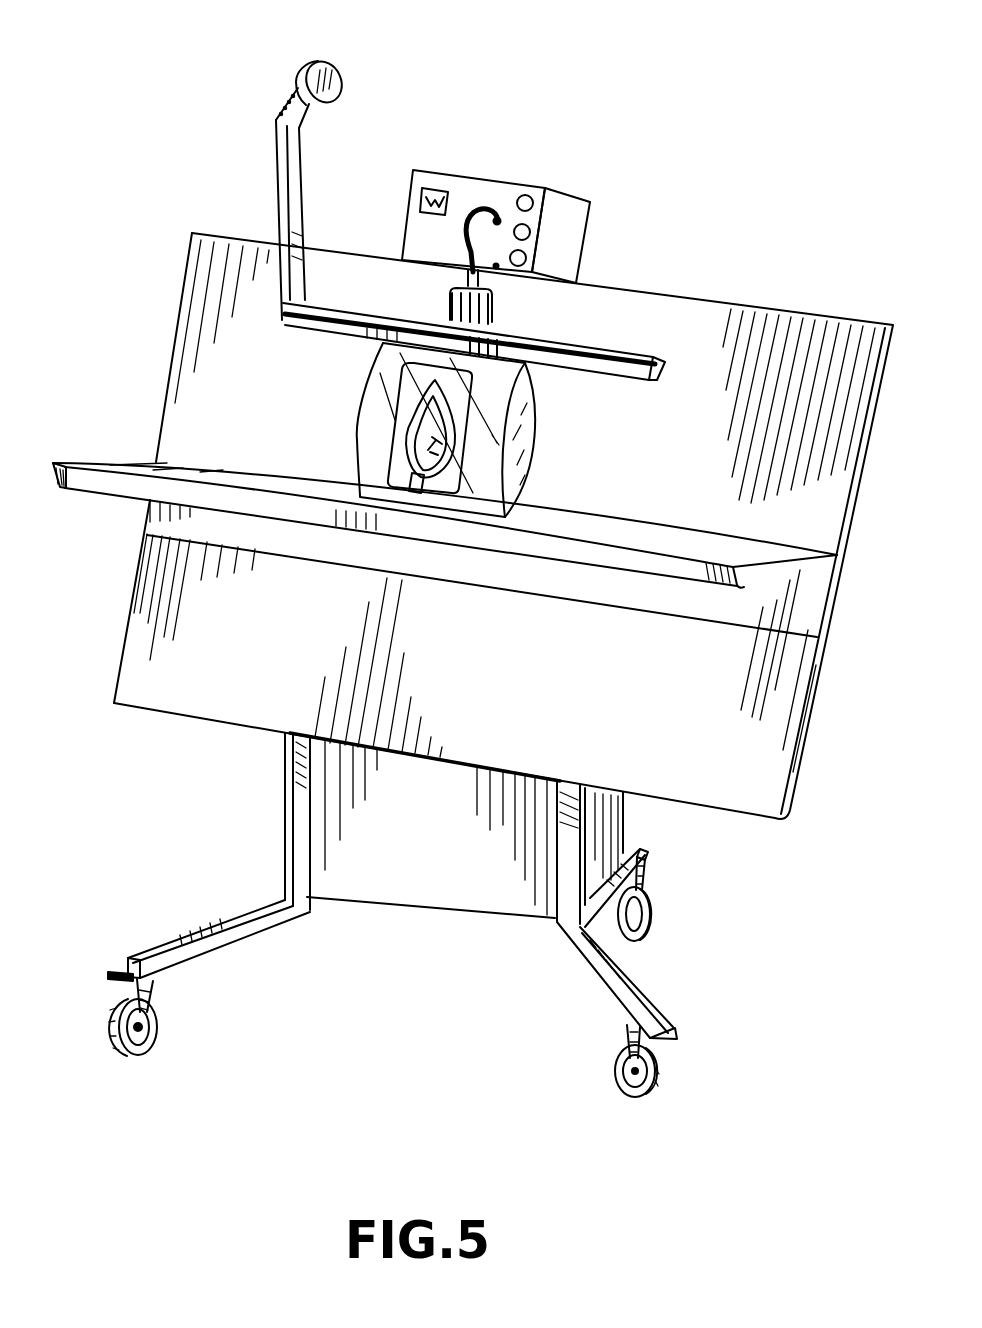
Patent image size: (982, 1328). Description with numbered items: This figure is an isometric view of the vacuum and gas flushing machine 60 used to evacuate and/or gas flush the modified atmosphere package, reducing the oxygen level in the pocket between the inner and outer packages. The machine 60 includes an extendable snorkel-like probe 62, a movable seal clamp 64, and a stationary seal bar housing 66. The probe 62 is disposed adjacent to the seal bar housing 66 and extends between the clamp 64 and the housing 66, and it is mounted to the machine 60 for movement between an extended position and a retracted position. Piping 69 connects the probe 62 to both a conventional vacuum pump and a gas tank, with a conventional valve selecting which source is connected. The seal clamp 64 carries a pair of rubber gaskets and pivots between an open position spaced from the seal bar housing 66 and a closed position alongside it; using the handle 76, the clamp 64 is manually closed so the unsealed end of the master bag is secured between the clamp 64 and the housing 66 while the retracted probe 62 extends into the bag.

The vacuum and gas flushing machine 60 is at (140, 98).
The extendable snorkel-like probe 62 is at (517, 302).
The movable seal clamp 64 is at (616, 363).
The stationary seal bar housing 66 is at (654, 362).
The piping 69 is at (473, 205).
The handle 76 is at (277, 118).